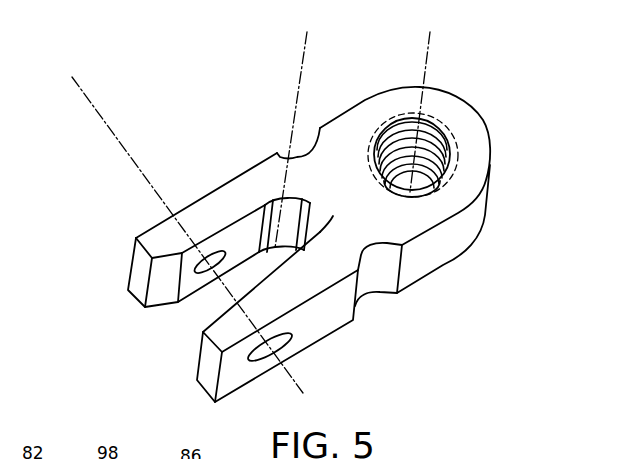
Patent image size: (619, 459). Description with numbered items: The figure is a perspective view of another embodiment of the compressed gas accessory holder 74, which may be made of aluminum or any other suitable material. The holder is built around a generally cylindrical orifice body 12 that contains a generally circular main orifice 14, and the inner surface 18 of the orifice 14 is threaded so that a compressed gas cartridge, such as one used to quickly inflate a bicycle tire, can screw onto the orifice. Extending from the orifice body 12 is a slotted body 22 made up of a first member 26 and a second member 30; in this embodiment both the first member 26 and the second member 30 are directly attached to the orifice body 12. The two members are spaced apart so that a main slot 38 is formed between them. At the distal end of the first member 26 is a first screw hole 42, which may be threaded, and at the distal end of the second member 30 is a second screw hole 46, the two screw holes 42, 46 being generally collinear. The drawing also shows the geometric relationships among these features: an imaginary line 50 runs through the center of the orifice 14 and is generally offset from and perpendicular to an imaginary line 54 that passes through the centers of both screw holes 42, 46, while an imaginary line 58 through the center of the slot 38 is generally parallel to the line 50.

The orifice body 12 is at (473, 218).
The main orifice 14 is at (422, 183).
The inner surface 18 is at (422, 133).
The slotted body 22 is at (267, 190).
The first member 26 is at (225, 333).
The second member 30 is at (153, 236).
The main slot 38 is at (248, 275).
The first screw hole 42 is at (290, 348).
The second screw hole 46 is at (208, 277).
The imaginary line through the center of the orifice 50 is at (420, 65).
The imaginary line through the center of both screw holes 54 is at (110, 128).
The imaginary line through the center of slot 58 is at (302, 57).
The compressed gas accessory holder 74 is at (513, 100).